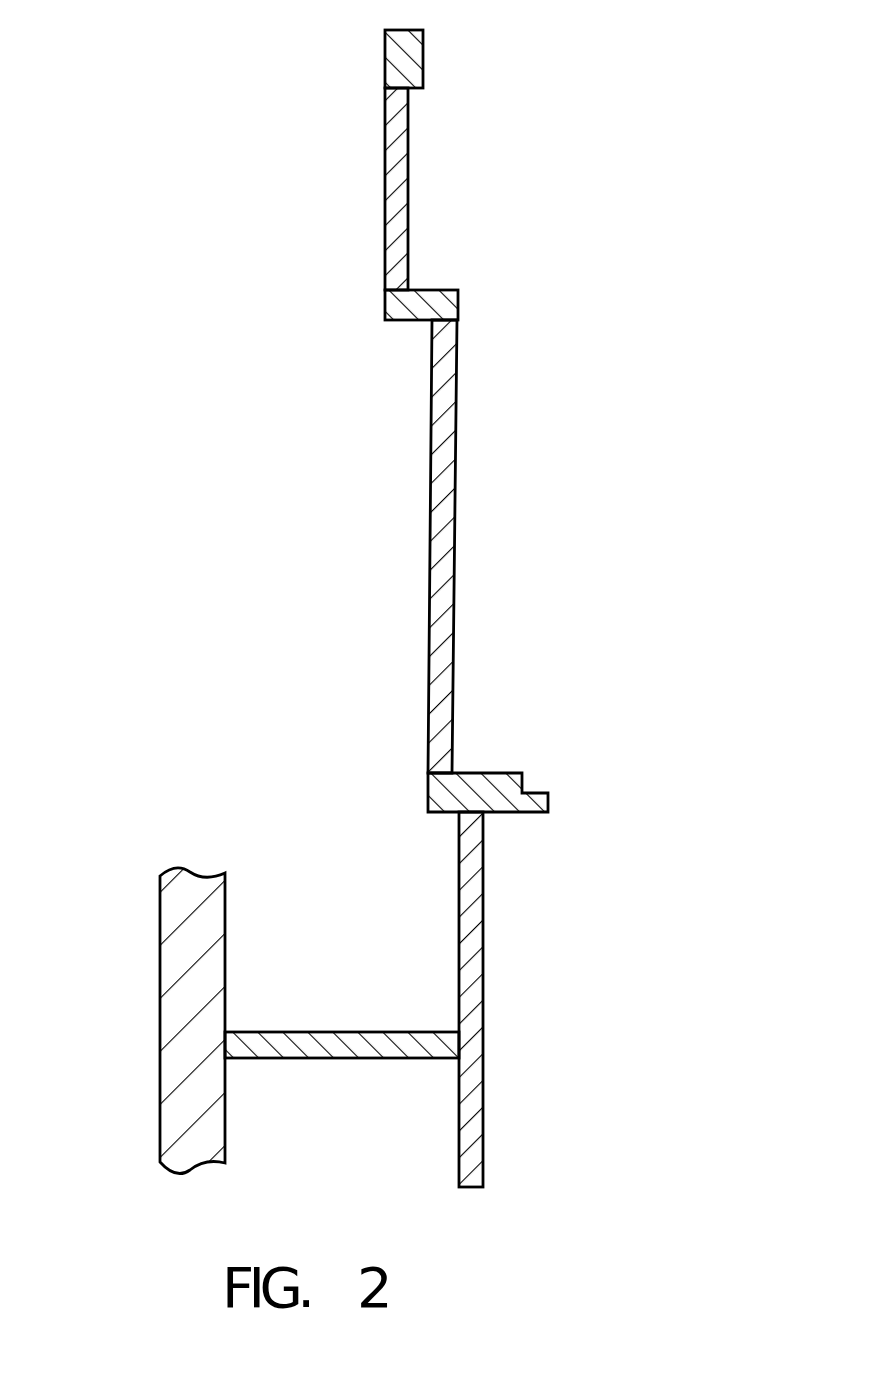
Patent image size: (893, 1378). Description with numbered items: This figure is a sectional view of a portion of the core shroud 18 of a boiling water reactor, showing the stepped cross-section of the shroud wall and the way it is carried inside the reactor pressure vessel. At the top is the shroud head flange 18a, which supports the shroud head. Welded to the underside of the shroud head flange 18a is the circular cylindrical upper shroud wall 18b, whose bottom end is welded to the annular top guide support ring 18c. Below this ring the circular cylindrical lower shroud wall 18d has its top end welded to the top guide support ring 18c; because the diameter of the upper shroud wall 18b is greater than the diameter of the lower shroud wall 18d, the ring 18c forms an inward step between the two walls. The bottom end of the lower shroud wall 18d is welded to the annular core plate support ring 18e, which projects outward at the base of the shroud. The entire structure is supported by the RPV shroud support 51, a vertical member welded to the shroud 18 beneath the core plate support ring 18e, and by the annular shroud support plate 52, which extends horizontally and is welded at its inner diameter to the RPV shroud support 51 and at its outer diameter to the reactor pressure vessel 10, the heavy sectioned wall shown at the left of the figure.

The reactor pressure vessel 10 is at (152, 978).
The core shroud 18 is at (441, 416).
The shroud head flange 18a is at (423, 48).
The upper shroud wall 18b is at (382, 167).
The top guide support ring 18c is at (395, 320).
The lower shroud wall 18d is at (457, 640).
The core plate support ring 18e is at (428, 790).
The RPV shroud support 51 is at (459, 897).
The shroud support plate 52 is at (318, 1058).